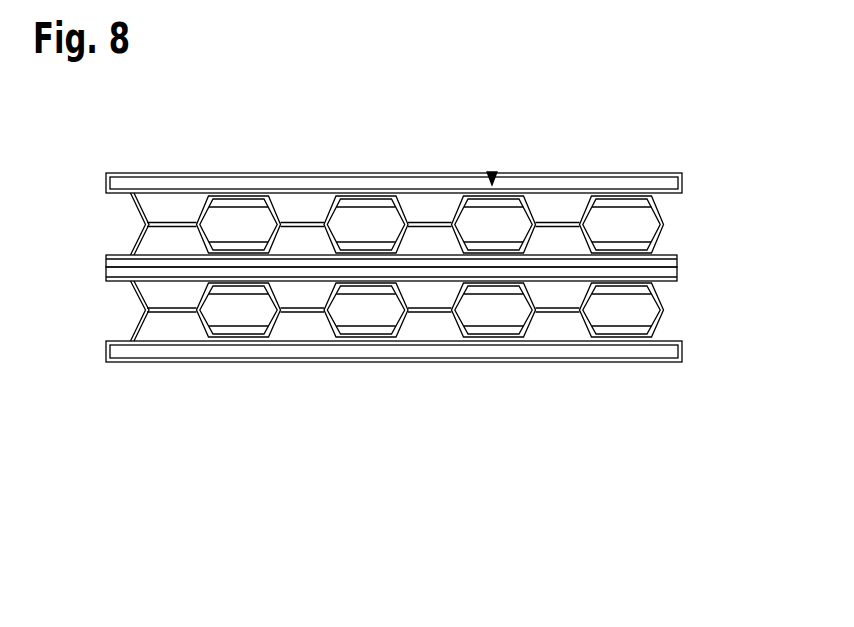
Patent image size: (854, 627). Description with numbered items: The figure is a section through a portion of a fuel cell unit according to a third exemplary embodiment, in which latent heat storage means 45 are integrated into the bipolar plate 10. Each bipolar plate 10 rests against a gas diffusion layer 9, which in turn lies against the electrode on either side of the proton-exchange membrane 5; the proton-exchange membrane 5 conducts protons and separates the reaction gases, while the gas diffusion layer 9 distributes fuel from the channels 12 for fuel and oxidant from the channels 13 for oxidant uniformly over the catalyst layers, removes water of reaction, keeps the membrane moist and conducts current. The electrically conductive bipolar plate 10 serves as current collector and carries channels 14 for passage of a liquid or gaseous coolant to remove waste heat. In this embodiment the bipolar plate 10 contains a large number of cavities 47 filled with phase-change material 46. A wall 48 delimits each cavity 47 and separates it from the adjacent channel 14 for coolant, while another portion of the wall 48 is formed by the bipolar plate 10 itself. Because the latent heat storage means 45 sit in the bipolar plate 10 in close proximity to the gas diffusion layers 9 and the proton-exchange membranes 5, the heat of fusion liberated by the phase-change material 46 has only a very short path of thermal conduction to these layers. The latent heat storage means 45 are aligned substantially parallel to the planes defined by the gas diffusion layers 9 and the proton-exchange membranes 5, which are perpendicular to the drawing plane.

The proton-exchange membrane 5 is at (433, 272).
The gas diffusion layer 9 is at (547, 181).
The bipolar plate 10 is at (353, 257).
The channels for fuel 12 is at (150, 237).
The channels for oxidant 13 is at (172, 205).
The channels for coolant 14 is at (243, 226).
The latent heat storage means 45 is at (492, 174).
The phase-change material 46 is at (292, 257).
The cavity 47 is at (218, 206).
The wall 48 is at (420, 257).